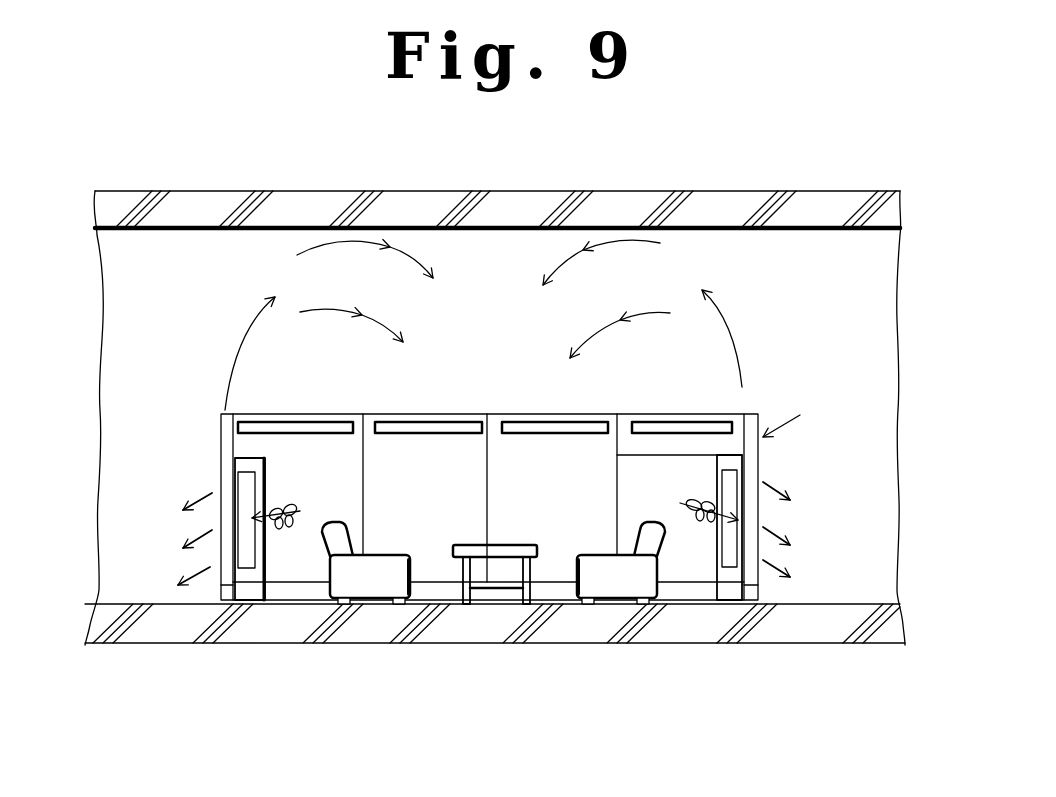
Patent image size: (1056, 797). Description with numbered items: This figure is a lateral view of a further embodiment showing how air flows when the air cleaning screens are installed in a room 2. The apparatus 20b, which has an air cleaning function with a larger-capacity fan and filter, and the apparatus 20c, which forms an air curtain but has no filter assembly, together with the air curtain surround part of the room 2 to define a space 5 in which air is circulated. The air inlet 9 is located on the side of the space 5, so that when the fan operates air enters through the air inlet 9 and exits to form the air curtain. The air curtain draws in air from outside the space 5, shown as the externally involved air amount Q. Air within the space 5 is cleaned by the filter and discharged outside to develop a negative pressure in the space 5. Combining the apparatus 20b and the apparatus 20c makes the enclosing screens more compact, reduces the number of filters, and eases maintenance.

The room 2 is at (875, 268).
The space 5 is at (549, 488).
The air inlet 9 is at (330, 422).
The apparatus having an air cleaning function 20b is at (248, 590).
The apparatus for generating an air curtain 20c is at (430, 563).
The externally involved air amount Q is at (752, 345).